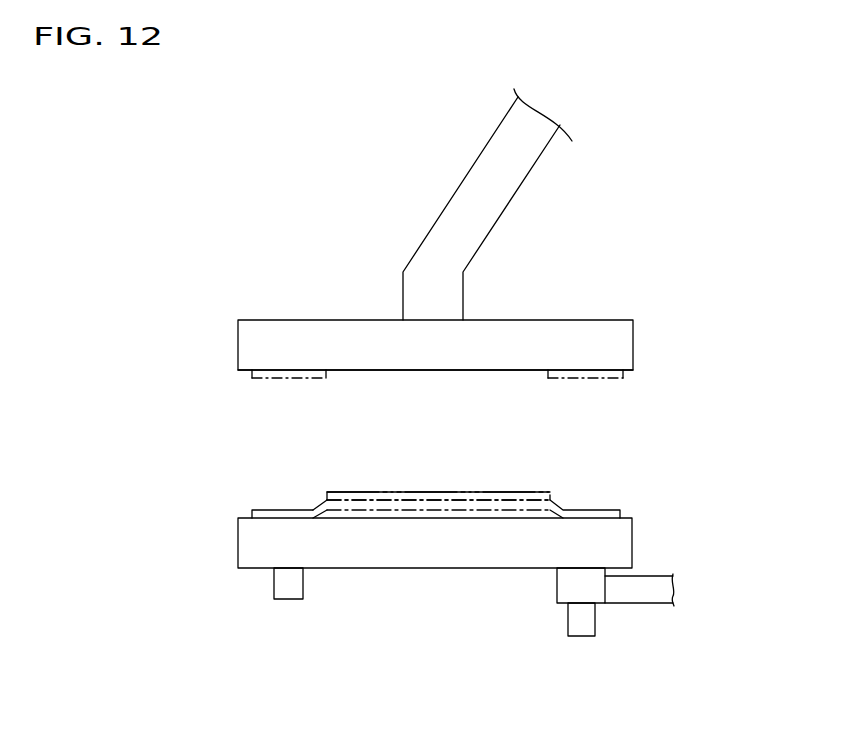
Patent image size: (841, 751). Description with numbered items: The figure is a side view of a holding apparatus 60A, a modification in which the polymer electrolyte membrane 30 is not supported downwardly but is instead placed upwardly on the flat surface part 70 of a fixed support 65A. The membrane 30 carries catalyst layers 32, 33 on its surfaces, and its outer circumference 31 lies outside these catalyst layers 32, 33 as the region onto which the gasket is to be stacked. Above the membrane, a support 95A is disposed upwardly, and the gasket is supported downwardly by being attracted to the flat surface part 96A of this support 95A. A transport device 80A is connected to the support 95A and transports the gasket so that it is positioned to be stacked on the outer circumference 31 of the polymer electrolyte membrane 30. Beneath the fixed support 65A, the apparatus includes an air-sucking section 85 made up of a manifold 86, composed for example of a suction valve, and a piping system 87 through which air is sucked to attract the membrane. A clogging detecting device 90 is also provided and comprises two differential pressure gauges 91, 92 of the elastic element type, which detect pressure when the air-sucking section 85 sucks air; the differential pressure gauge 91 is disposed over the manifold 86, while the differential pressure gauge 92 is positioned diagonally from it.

The transport device 80A is at (470, 172).
The support 95A is at (633, 350).
The flat surface part 96A is at (441, 371).
The holding apparatus 60A is at (222, 462).
The fixed support 65A is at (238, 548).
The flat surface part 70 is at (252, 512).
The polymer electrolyte membrane 30 is at (474, 474).
The outer circumference 31 is at (474, 474).
The catalyst layer 32 is at (438, 470).
The catalyst layer 33 is at (364, 508).
The clogging detecting device 90 is at (434, 621).
The differential pressure gauge 91 is at (568, 615).
The differential pressure gauge 92 is at (305, 585).
The air-sucking section 85 is at (646, 624).
The manifold 86 is at (605, 589).
The piping system 87 is at (620, 638).